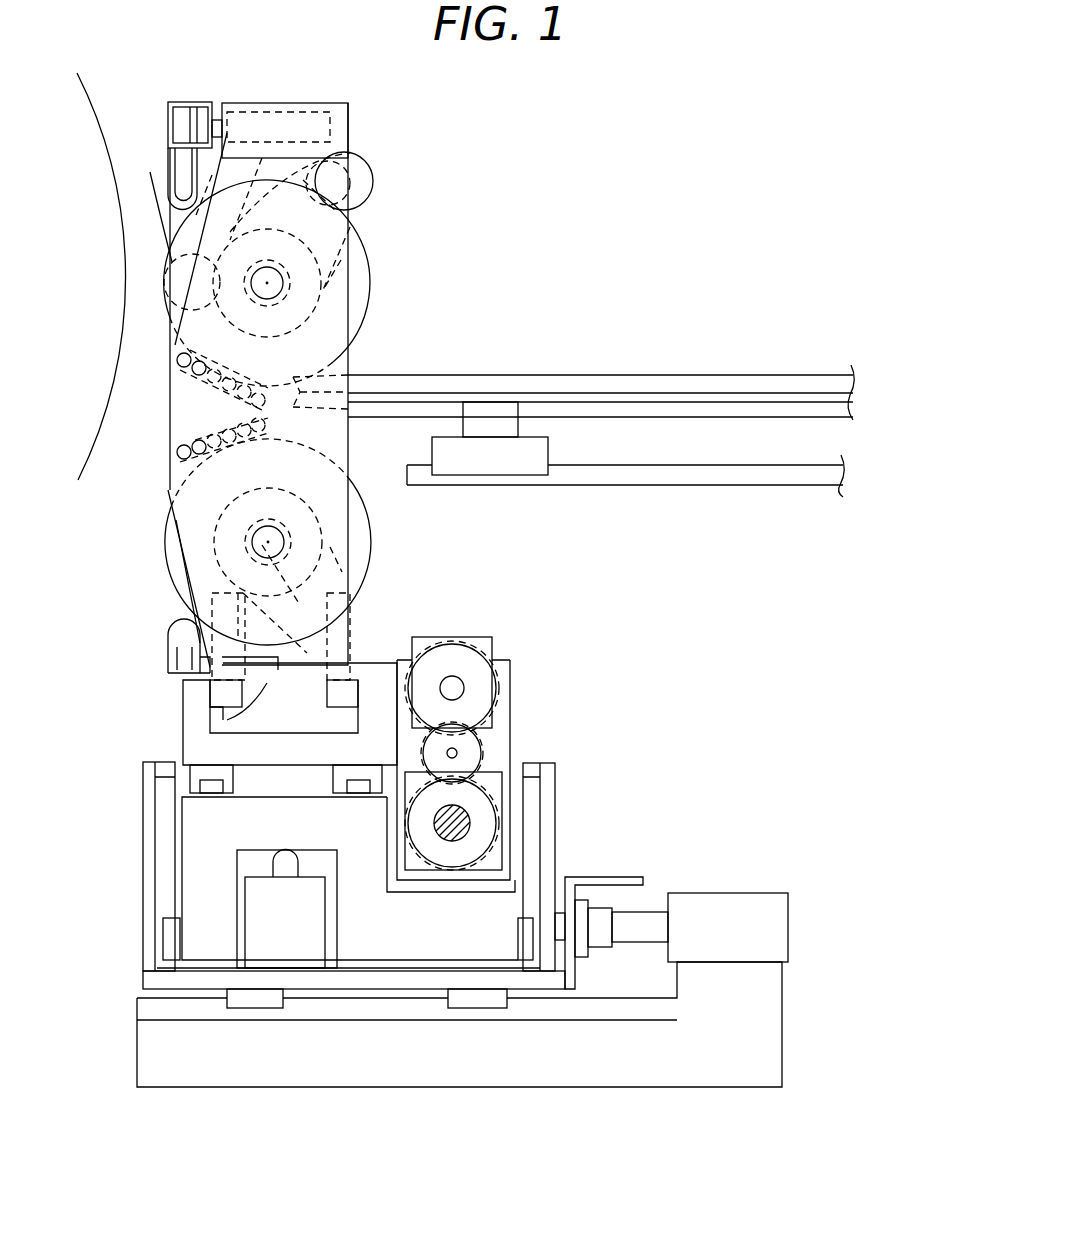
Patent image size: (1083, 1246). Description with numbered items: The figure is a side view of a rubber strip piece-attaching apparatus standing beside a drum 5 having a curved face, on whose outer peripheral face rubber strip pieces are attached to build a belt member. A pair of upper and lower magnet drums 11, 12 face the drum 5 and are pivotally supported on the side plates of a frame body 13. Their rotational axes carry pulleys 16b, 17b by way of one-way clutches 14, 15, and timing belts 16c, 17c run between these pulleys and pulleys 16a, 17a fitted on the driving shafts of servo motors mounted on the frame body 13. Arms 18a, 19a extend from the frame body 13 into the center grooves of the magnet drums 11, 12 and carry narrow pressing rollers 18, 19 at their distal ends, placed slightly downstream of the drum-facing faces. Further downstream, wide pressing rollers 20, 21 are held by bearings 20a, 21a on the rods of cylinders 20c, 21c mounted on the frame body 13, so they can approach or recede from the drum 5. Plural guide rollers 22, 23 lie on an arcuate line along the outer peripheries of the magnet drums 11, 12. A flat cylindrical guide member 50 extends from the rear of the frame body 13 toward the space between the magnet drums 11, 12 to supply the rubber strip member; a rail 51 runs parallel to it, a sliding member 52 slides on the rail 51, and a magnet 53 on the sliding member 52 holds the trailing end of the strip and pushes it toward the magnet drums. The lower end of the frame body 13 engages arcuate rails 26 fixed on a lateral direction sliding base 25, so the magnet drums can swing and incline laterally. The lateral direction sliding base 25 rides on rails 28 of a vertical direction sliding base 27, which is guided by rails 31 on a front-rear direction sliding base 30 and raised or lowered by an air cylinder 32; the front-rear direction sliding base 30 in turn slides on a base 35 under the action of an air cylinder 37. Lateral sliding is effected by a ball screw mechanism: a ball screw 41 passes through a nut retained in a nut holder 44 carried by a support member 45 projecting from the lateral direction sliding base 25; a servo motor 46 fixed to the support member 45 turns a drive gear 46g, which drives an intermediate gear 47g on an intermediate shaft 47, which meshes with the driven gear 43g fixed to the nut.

The curved face drum 5 is at (95, 98).
The magnet drum 11 is at (168, 212).
The magnet drum 12 is at (170, 590).
The frame body 13 is at (363, 363).
The one-way clutch 14 is at (285, 289).
The one-way clutch 15 is at (285, 535).
The pulley 16a is at (357, 182).
The pulley 16b is at (343, 225).
The timing belt 16c is at (357, 262).
The pulley 17a is at (350, 640).
The pulley 17b is at (317, 572).
The timing belt 17c is at (332, 553).
The pressing roller 18 is at (170, 262).
The arm 18a is at (145, 165).
The pressing roller 19 is at (168, 520).
The arm 19a is at (190, 600).
The pressing roller 20 is at (172, 187).
The bearing 20a is at (190, 170).
The cylinder 20c is at (305, 110).
The pressing roller 21 is at (168, 628).
The bearing 21a is at (172, 652).
The cylinder 21c is at (227, 717).
The guide roller 22 is at (210, 386).
The guide roller 23 is at (210, 450).
The lateral direction sliding base 25 is at (183, 735).
The arcuate rail 26 is at (222, 695).
The vertical direction sliding base 27 is at (230, 828).
The rails 28 is at (200, 785).
The front-rear direction sliding base 30 is at (145, 978).
The rails 31 is at (175, 862).
The air cylinder 32 is at (273, 913).
The base 35 is at (137, 1045).
The air cylinder 37 is at (735, 893).
The ball screw 41 is at (470, 823).
The driven gear 43g is at (493, 855).
The nut holder 44 is at (512, 792).
The support member 45 is at (510, 700).
The servo motor 46 is at (465, 635).
The drive gear 46g is at (500, 675).
The intermediate shaft 47 is at (485, 737).
The intermediate gear 47g is at (485, 757).
The guide member 50 is at (607, 375).
The rail 51 is at (672, 485).
The sliding member 52 is at (548, 445).
The magnet 53 is at (463, 423).